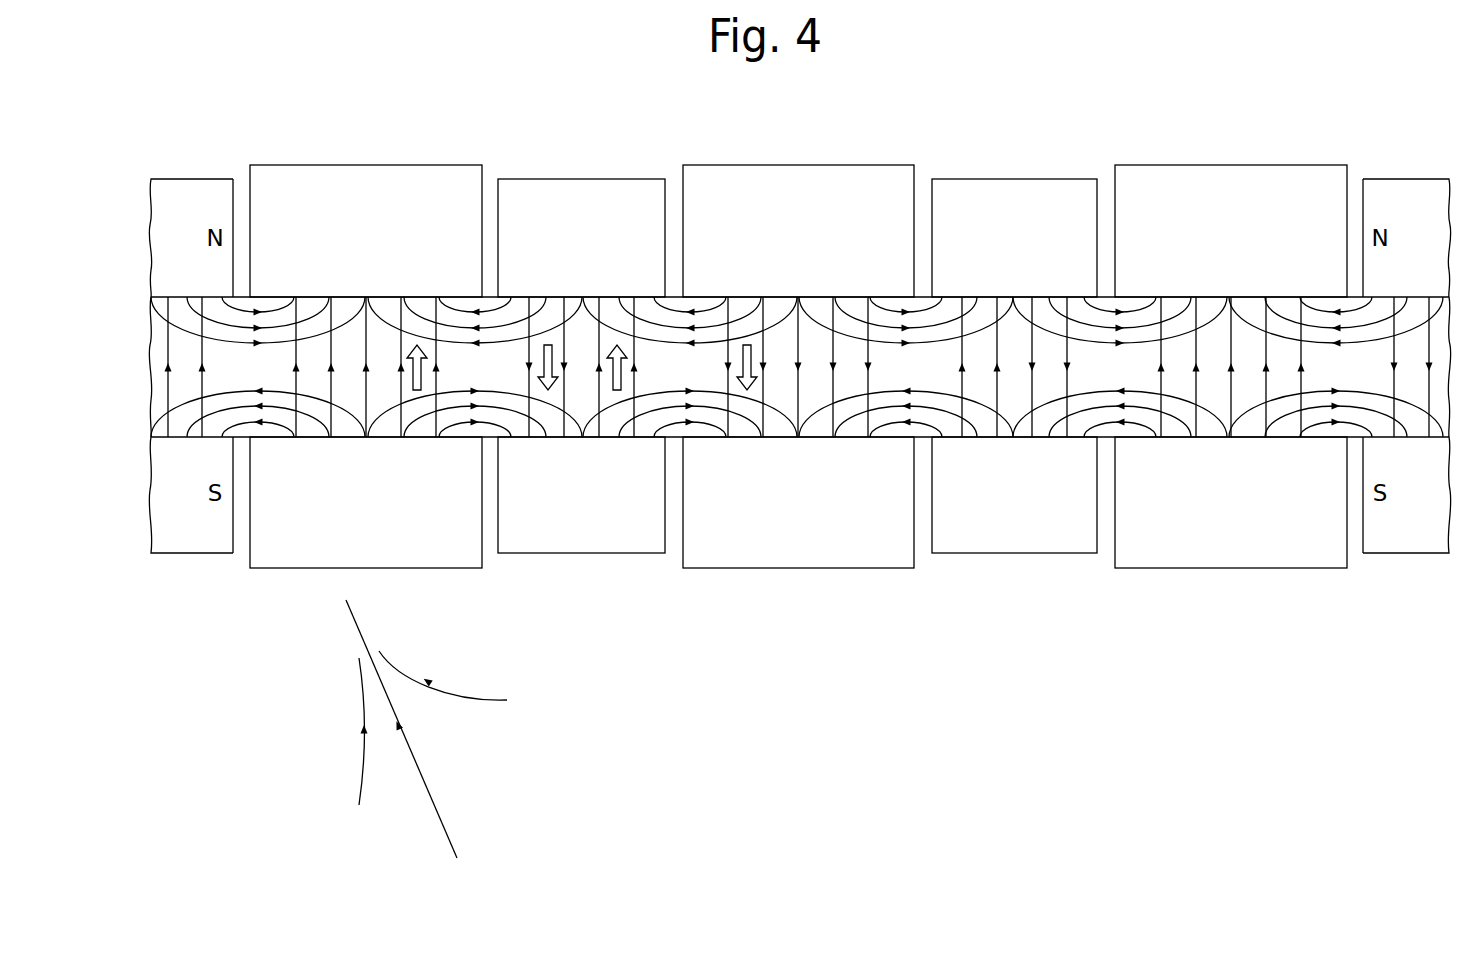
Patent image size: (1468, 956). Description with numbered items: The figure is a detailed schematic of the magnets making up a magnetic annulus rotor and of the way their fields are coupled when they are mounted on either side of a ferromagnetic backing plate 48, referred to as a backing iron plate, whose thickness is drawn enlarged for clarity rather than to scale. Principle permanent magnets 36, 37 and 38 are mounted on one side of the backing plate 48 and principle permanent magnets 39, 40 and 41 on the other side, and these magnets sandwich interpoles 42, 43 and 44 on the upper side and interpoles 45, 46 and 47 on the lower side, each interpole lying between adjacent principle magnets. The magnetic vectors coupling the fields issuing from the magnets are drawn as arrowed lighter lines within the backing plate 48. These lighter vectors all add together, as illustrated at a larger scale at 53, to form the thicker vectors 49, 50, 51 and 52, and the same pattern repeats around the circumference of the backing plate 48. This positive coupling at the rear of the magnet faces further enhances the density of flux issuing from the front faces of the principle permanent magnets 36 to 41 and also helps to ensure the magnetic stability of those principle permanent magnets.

The principle permanent magnet 36 is at (329, 165).
The principle permanent magnet 37 is at (815, 165).
The principle permanent magnet 38 is at (1250, 165).
The principle permanent magnet 39 is at (270, 568).
The principle permanent magnet 40 is at (870, 568).
The principle permanent magnet 41 is at (1278, 568).
The interpole 42 is at (557, 179).
The interpole 43 is at (1017, 179).
The interpole 44 is at (1407, 179).
The interpole 45 is at (583, 555).
The interpole 46 is at (1022, 555).
The interpole 47 is at (1400, 555).
The ferromagnetic backing plate 48 is at (143, 355).
The thicker vector 49 is at (417, 392).
The thicker vector 50 is at (549, 391).
The thicker vector 51 is at (617, 392).
The thicker vector 52 is at (747, 391).
The larger-scale vector addition 53 is at (303, 728).